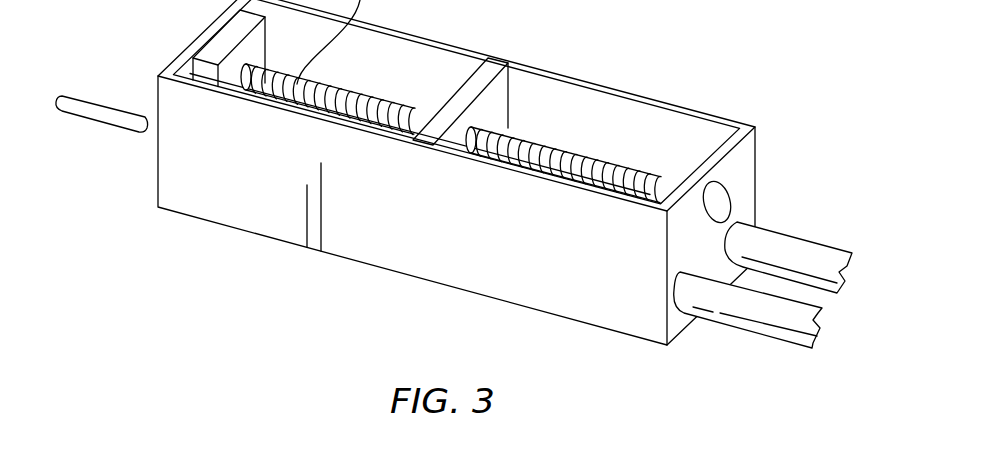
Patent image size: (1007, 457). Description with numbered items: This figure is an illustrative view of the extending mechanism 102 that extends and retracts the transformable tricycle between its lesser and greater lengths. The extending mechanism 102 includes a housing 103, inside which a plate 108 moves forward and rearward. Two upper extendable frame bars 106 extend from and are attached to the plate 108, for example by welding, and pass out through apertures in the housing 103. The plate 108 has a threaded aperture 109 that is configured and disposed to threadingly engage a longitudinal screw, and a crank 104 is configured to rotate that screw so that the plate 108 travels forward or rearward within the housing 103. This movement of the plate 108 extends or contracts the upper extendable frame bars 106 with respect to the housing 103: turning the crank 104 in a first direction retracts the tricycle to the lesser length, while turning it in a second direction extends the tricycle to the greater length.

The extending mechanism 102 is at (295, 225).
The housing 103 is at (745, 168).
The crank 104 is at (147, 105).
The upper extendable frame bars 106 is at (797, 250).
The plate 108 is at (483, 82).
The threaded aperture 109 is at (495, 117).